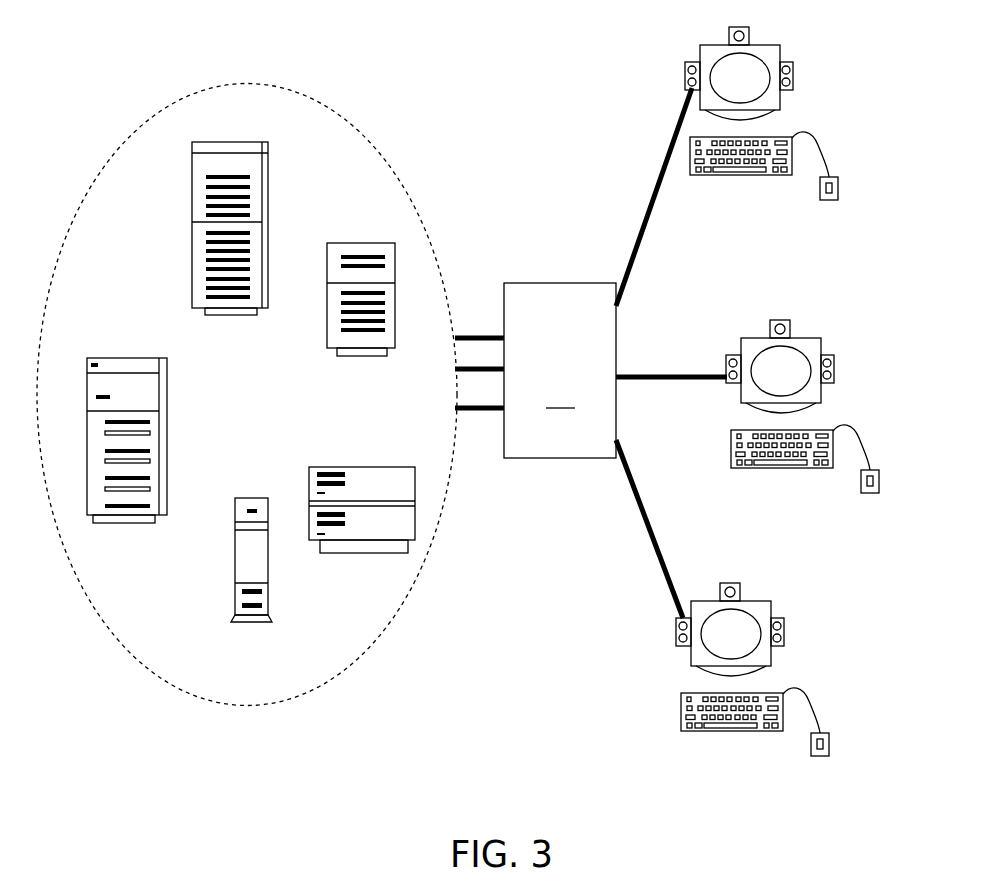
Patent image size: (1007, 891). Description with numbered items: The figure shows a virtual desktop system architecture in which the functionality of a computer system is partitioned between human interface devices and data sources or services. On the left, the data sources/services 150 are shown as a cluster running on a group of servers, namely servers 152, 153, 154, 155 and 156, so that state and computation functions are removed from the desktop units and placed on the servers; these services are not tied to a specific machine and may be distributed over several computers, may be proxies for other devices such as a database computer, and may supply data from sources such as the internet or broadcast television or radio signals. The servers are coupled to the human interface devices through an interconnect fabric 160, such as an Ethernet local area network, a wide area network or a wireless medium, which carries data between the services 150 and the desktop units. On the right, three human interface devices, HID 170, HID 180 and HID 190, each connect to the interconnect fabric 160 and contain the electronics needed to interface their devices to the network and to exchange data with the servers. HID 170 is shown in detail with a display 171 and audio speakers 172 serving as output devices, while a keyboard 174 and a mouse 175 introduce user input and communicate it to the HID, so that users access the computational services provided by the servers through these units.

The data sources/services 150 is at (110, 157).
The server 152 is at (267, 180).
The server 153 is at (326, 338).
The server 154 is at (167, 421).
The server 155 is at (309, 468).
The server 156 is at (268, 583).
The interconnect fabric 160 is at (591, 353).
The human interface device (HID) 170 is at (724, 134).
The display 171 is at (762, 57).
The audio speakers 172 is at (796, 70).
The keyboard 174 is at (713, 177).
The mouse 175 is at (829, 200).
The human interface device (HID) 180 is at (718, 336).
The human interface device (HID) 190 is at (701, 569).